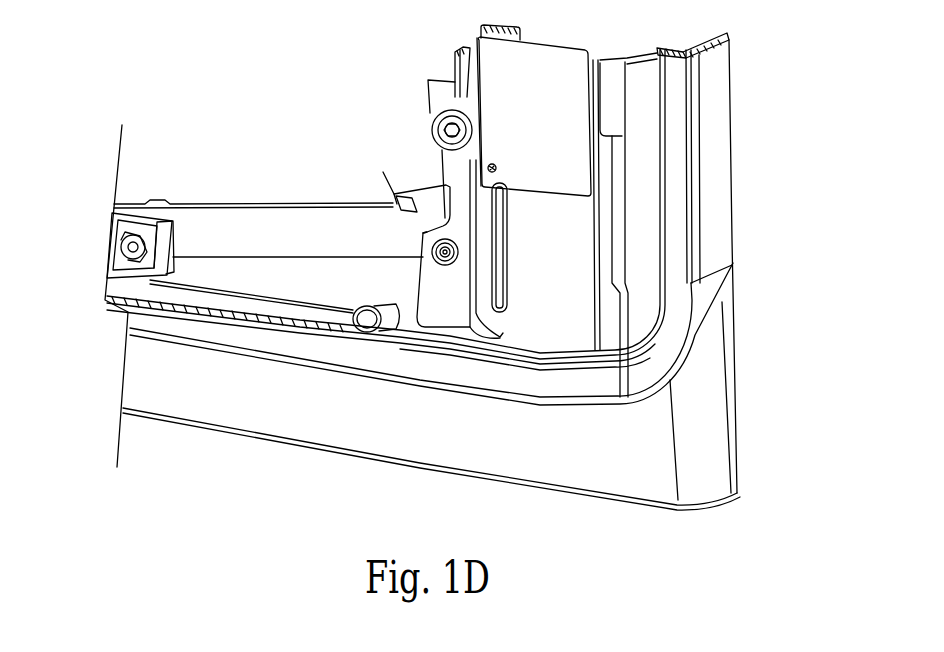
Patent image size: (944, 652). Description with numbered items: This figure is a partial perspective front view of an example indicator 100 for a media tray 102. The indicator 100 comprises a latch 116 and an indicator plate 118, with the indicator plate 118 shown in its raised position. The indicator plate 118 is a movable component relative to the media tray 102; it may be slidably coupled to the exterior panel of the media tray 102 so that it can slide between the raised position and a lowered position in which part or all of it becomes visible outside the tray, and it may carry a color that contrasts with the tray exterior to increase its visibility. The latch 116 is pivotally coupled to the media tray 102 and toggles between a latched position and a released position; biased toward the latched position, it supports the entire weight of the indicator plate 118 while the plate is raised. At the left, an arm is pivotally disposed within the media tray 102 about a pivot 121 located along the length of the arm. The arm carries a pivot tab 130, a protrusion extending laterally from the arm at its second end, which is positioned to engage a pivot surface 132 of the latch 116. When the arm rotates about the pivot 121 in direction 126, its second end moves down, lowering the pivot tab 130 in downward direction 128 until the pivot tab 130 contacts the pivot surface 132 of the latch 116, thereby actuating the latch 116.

The indicator 100 is at (197, 62).
The media tray 102 is at (749, 134).
The latch 116 is at (450, 294).
The indicator plate 118 is at (552, 99).
The pivot 121 is at (118, 250).
The direction 126 is at (133, 180).
The downward direction 128 is at (418, 253).
The pivot tab 130 is at (419, 252).
The pivot surface 132 is at (410, 296).